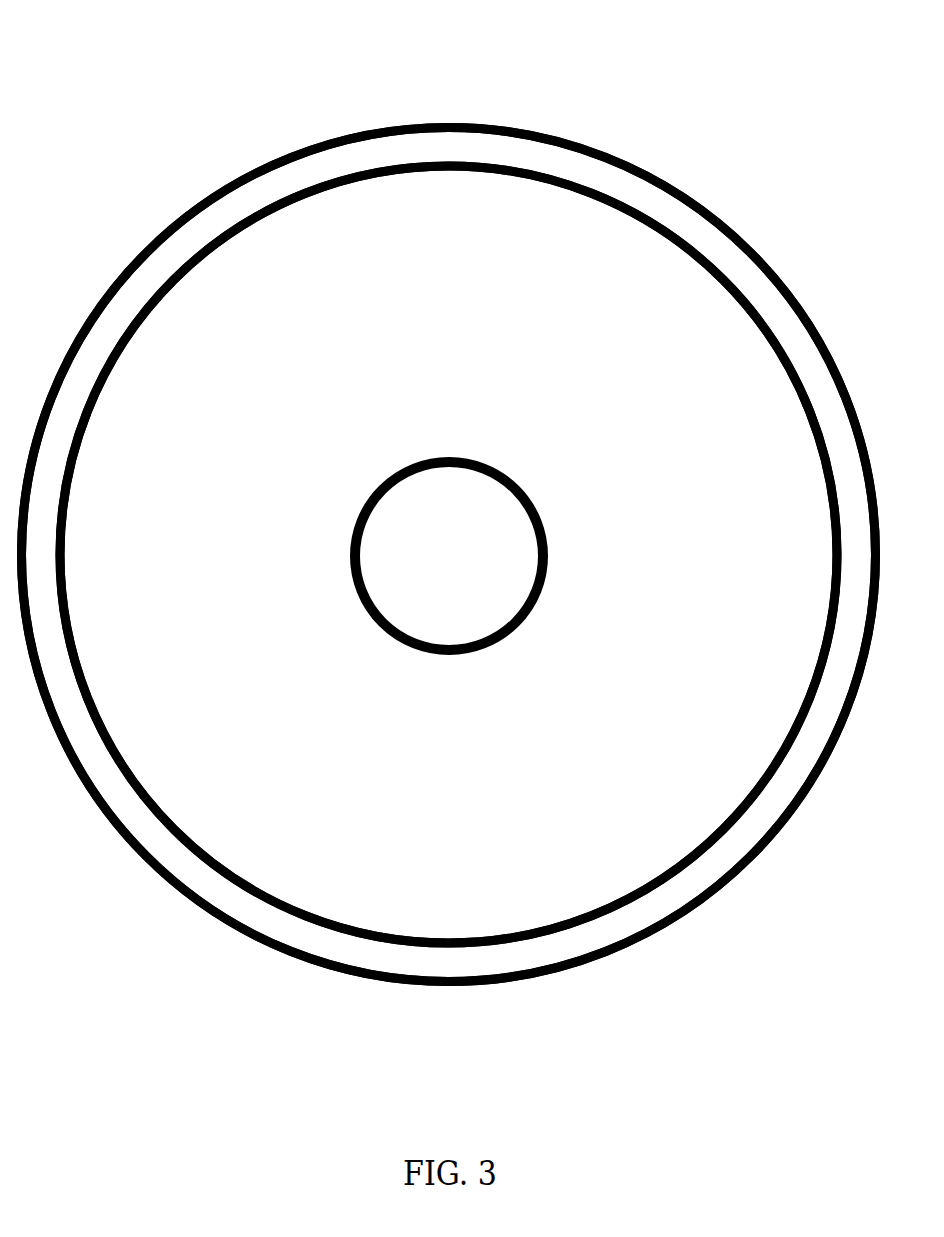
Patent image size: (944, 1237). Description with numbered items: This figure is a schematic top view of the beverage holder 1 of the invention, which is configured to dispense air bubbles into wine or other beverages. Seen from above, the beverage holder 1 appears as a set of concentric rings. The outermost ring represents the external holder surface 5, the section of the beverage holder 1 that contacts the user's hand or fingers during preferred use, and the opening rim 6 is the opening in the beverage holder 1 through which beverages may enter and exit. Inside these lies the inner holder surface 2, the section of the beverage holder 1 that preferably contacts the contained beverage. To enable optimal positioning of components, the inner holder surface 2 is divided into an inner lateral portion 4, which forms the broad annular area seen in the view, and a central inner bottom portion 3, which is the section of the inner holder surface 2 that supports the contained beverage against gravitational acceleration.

The beverage holder 1 is at (168, 128).
The inner holder surface 2 is at (509, 172).
The inner bottom portion 3 is at (440, 569).
The inner lateral portion 4 is at (680, 500).
The external holder surface 5 is at (380, 124).
The opening rim 6 is at (740, 265).